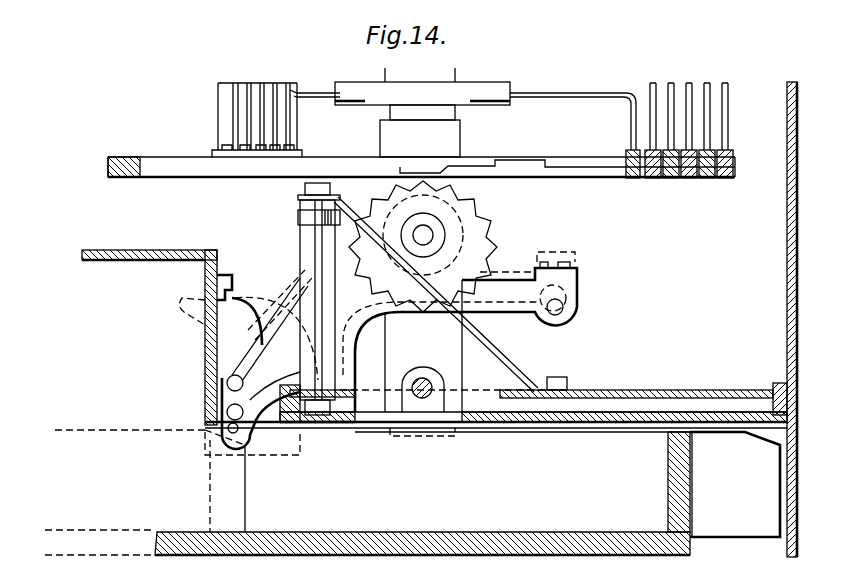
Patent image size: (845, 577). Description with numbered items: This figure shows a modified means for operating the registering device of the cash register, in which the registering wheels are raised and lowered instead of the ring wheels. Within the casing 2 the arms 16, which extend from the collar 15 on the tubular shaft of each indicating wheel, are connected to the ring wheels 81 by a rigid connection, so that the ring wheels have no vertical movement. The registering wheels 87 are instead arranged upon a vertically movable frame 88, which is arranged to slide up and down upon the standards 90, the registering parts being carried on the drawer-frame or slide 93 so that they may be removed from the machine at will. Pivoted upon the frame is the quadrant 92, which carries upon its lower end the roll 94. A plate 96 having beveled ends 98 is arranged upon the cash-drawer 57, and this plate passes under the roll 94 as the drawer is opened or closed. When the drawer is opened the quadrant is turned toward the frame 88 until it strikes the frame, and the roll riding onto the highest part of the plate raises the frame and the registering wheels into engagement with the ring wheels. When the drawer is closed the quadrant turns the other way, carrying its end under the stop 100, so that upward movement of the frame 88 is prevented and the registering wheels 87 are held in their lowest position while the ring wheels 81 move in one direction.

The casing 2 is at (783, 283).
The collar 15 is at (372, 100).
The arms 16 is at (225, 106).
The cash-drawer 57 is at (438, 532).
The ring wheels 81 is at (605, 177).
The registering wheels 87 is at (462, 236).
The vertically movable frame 88 is at (458, 332).
The standards 90 is at (315, 247).
The quadrant 92 is at (250, 332).
The drawer-frame or slide 93 is at (596, 392).
The roll 94 is at (237, 440).
The plate 96 is at (498, 472).
The beveled ends 98 is at (258, 443).
The stop 100 is at (222, 276).